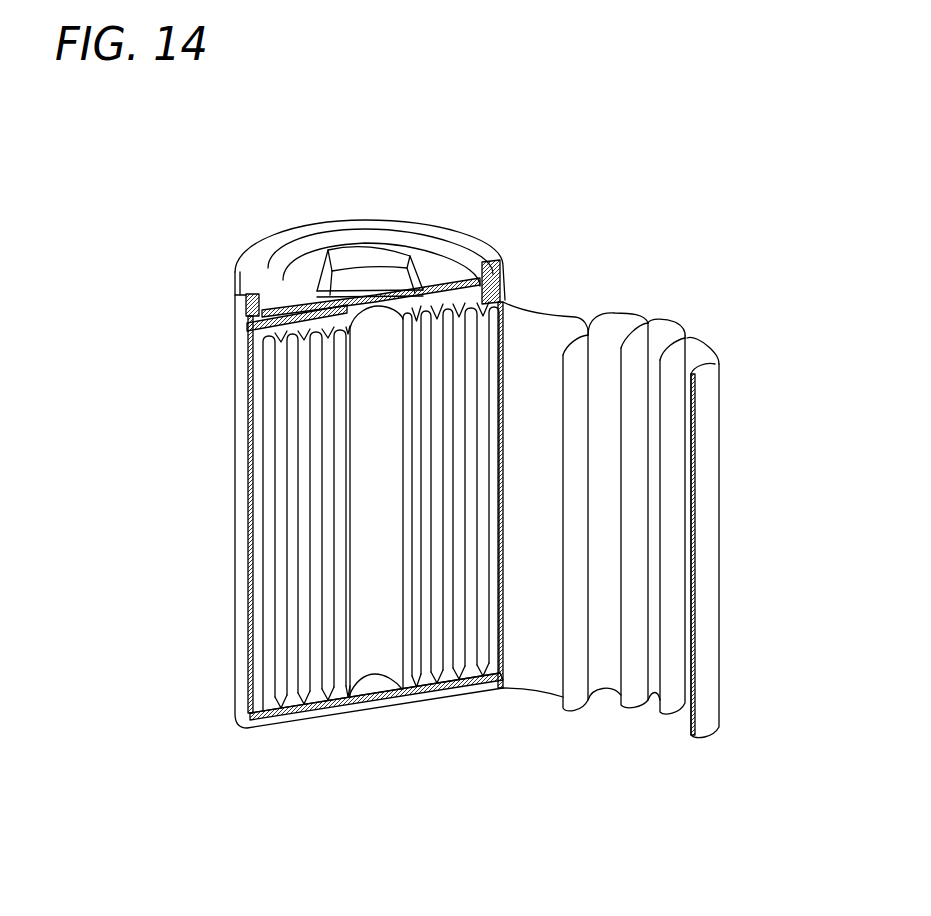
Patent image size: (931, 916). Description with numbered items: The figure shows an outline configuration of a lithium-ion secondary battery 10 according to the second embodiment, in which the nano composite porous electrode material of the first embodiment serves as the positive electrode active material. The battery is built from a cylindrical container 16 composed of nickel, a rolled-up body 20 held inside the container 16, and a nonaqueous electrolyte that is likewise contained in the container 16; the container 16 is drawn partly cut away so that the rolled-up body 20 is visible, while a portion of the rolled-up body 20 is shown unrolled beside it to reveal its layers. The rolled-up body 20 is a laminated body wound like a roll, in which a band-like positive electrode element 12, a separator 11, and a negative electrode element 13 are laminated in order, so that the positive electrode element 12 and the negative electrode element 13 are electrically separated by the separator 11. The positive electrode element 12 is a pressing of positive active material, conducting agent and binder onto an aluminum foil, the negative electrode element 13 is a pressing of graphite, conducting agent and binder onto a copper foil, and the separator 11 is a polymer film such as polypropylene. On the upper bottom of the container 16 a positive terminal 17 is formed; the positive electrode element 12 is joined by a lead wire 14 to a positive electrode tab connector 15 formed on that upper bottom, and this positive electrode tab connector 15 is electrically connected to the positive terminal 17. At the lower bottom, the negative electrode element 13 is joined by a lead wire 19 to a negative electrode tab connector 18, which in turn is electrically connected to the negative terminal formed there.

The lithium-ion secondary battery 10 is at (488, 144).
The separator 11 is at (675, 454).
The positive electrode element 12 is at (703, 563).
The negative electrode element 13 is at (637, 688).
The lead wire 14 is at (437, 294).
The positive electrode tab connector 15 is at (412, 288).
The cylindrical container 16 is at (237, 396).
The positive terminal 17 is at (268, 268).
The negative electrode tab connector 18 is at (372, 688).
The lead wire 19 is at (445, 705).
The rolled-up body 20 is at (708, 318).